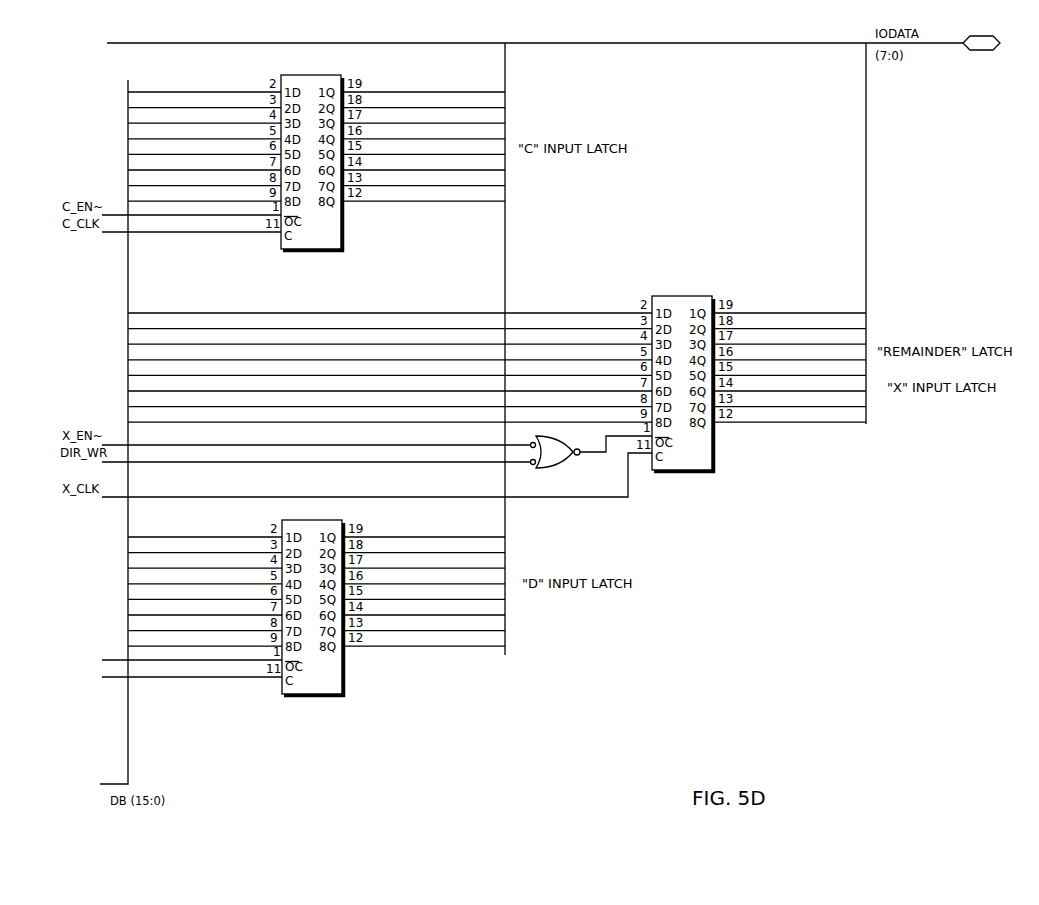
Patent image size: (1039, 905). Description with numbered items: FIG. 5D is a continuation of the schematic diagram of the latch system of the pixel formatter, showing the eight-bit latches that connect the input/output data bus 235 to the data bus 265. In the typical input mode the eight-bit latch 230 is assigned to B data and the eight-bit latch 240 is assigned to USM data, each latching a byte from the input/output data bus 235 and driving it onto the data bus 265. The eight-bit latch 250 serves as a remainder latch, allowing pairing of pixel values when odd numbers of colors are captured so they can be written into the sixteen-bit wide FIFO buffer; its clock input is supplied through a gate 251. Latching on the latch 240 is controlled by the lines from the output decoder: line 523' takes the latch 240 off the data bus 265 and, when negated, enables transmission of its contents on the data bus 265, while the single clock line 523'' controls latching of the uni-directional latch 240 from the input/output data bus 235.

The data bus 265 is at (553, 338).
The input/output data bus 235 is at (128, 272).
The eight-bit latch 230 is at (337, 231).
The eight-bit latch 250 is at (690, 458).
The NOR gate 251 is at (552, 458).
The eight-bit latch 240 is at (333, 678).
The line 523' is at (172, 673).
The clock line 523'' is at (172, 694).